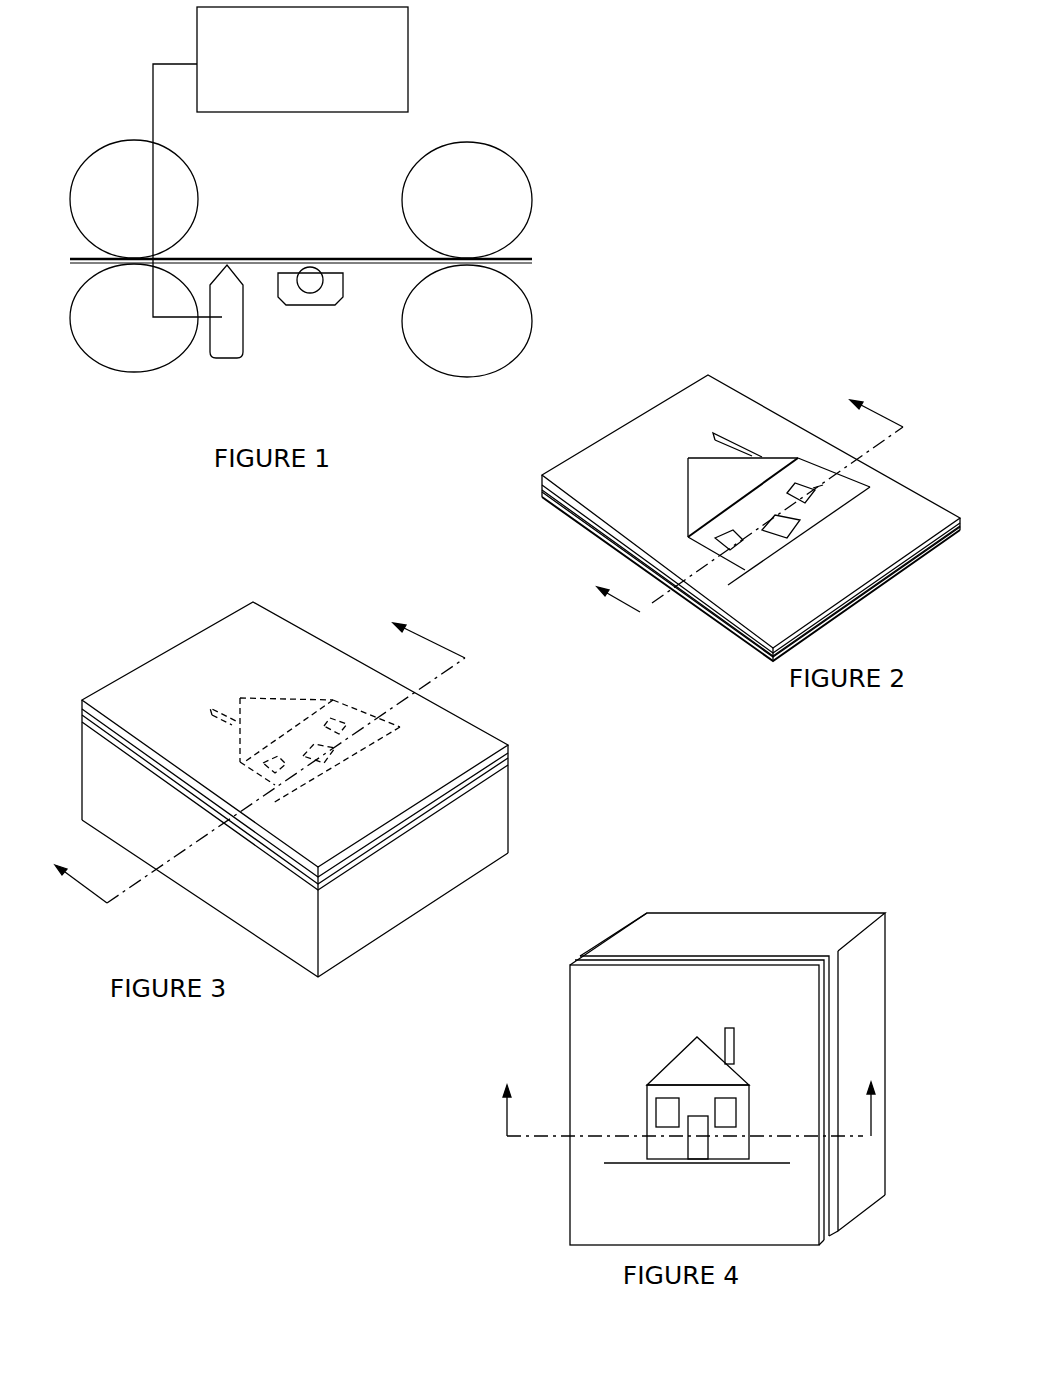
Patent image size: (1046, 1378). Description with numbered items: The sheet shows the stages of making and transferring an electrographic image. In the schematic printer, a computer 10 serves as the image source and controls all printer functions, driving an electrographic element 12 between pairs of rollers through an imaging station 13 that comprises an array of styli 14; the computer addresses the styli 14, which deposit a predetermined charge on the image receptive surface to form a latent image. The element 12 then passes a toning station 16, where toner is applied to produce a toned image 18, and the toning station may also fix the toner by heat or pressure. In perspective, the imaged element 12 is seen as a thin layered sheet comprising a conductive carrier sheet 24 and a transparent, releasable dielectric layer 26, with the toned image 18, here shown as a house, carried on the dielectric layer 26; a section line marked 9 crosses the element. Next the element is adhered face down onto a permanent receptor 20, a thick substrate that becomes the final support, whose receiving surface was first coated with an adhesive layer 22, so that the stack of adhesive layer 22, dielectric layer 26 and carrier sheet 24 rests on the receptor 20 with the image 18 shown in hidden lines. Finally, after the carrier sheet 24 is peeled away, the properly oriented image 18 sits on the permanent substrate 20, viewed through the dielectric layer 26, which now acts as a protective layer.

In FIG. 1, the computer 10 is at (290, 60).
In FIG. 3, the computer 10 is at (277, 775).
In FIG. 1, the electrographic element 12 is at (367, 265).
In FIG. 2, the electrographic element 12 is at (663, 377).
In FIG. 4, the electrographic element 12 is at (682, 1096).
In FIG. 1, the imaging station 13 is at (285, 335).
In FIG. 1, the array of styli 14 is at (237, 347).
In FIG. 1, the toning station 16 is at (312, 283).
In FIG. 2, the toned image 18 is at (712, 498).
In FIG. 3, the toned image 18 is at (285, 712).
In FIG. 4, the toned image 18 is at (677, 1073).
In FIG. 3, the permanent receptor 20 is at (373, 902).
In FIG. 4, the permanent receptor 20 is at (743, 931).
In FIG. 3, the adhesive layer 22 is at (393, 837).
In FIG. 4, the adhesive layer 22 is at (663, 956).
In FIG. 2, the conductive carrier sheet 24 is at (568, 518).
In FIG. 3, the conductive carrier sheet 24 is at (450, 787).
In FIG. 2, the dielectric layer 26 is at (545, 497).
In FIG. 3, the dielectric layer 26 is at (408, 820).
In FIG. 4, the dielectric layer 26 is at (611, 962).
In FIG. 2, the section line 9- 9 is at (759, 517).